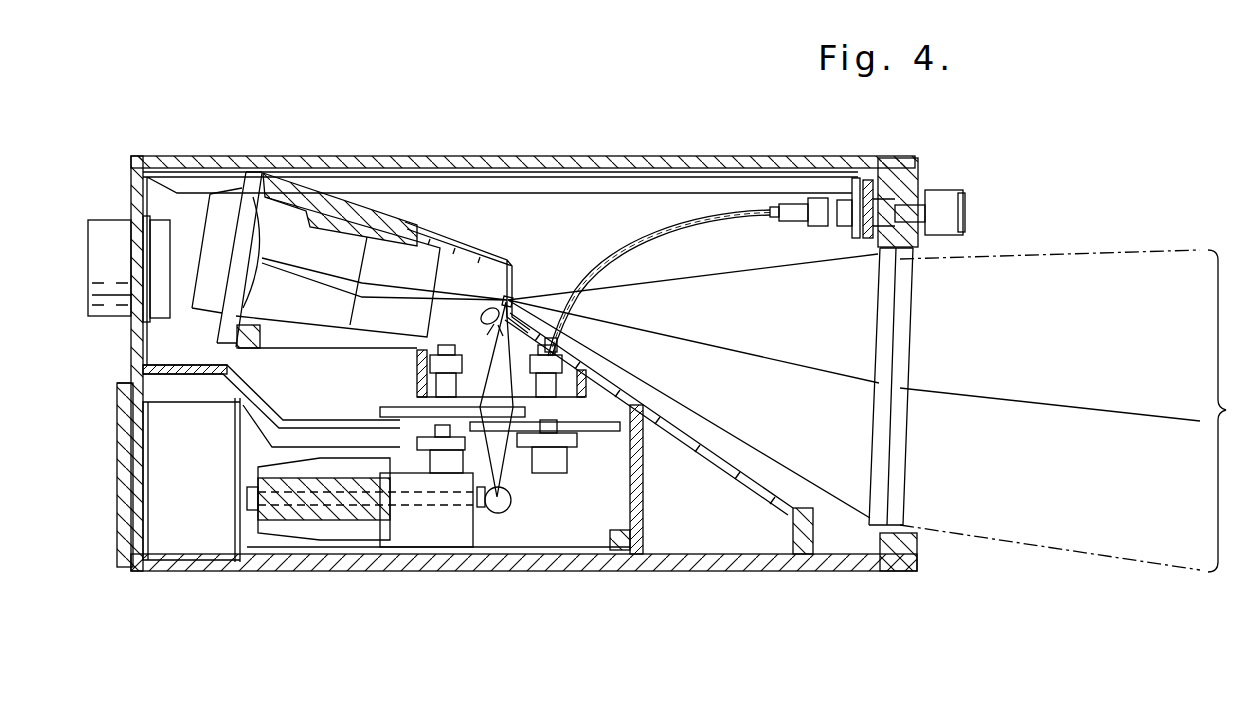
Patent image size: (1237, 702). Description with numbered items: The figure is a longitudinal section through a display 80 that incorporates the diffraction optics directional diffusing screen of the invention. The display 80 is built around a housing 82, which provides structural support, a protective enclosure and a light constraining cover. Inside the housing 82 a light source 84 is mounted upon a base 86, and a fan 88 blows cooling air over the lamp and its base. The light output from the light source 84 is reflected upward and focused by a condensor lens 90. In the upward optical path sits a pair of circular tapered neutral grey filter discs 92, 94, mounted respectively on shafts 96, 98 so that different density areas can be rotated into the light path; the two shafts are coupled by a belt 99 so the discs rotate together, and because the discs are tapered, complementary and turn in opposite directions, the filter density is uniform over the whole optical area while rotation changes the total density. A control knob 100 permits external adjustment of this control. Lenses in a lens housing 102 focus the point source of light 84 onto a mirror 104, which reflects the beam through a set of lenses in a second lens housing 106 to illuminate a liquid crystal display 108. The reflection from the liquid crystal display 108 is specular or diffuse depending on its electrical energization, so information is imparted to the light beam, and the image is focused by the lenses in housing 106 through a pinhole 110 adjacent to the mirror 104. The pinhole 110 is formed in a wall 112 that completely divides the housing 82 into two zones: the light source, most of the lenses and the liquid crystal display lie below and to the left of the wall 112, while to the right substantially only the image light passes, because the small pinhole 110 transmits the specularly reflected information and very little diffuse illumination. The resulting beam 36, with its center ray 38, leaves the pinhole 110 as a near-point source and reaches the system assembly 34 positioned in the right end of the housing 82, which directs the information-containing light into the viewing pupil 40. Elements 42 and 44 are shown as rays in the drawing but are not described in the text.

The system assembly 34 is at (912, 380).
The beam 36 is at (687, 286).
The center ray 38 is at (752, 349).
The viewing pupil 40 is at (1214, 241).
The upper boundary ray 42 is at (1072, 256).
The central ray 44 is at (1032, 398).
The display 80 is at (624, 96).
The housing 82 is at (486, 156).
The light source 84 is at (498, 514).
The base 86 is at (404, 548).
The fan 88 is at (203, 560).
The condensor lens 90 is at (516, 468).
The neutral grey filter disc 92 is at (414, 408).
The neutral grey filter disc 94 is at (602, 432).
The shaft 96 is at (420, 380).
The shaft 98 is at (562, 396).
The belt 99 is at (572, 470).
The control knob 100 is at (940, 192).
The lens housing 102 is at (562, 348).
The mirror 104 is at (479, 324).
The lens housing 106 is at (418, 242).
The liquid crystal display 108 is at (242, 198).
The pinhole 110 is at (514, 298).
The wall 112 is at (506, 260).